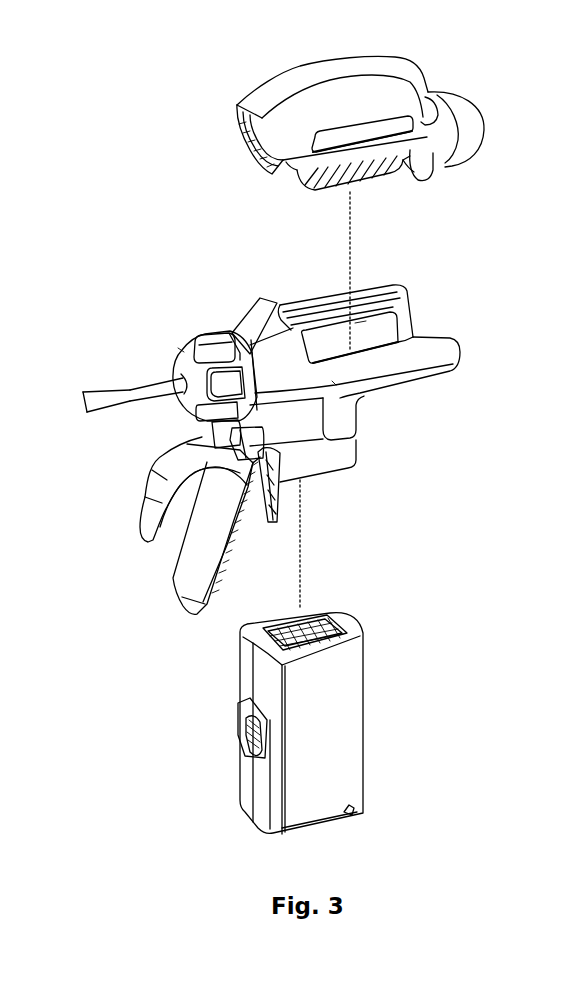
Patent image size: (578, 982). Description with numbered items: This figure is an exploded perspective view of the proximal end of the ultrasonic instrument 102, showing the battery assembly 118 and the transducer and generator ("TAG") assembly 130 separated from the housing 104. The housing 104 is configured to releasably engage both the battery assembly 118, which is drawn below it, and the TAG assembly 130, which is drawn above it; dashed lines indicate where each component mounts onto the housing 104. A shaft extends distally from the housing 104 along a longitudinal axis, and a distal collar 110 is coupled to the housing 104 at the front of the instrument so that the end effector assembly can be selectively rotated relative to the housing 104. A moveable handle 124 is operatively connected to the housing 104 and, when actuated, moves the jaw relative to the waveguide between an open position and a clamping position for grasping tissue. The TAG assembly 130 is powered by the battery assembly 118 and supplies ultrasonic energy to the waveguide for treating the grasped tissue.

The ultrasonic instrument 102 is at (94, 166).
The housing 104 is at (383, 429).
The distal collar 110 is at (205, 337).
The battery assembly 118 is at (327, 733).
The moveable handle 124 is at (170, 578).
The transducer and generator ("TAG") assembly 130 is at (391, 59).